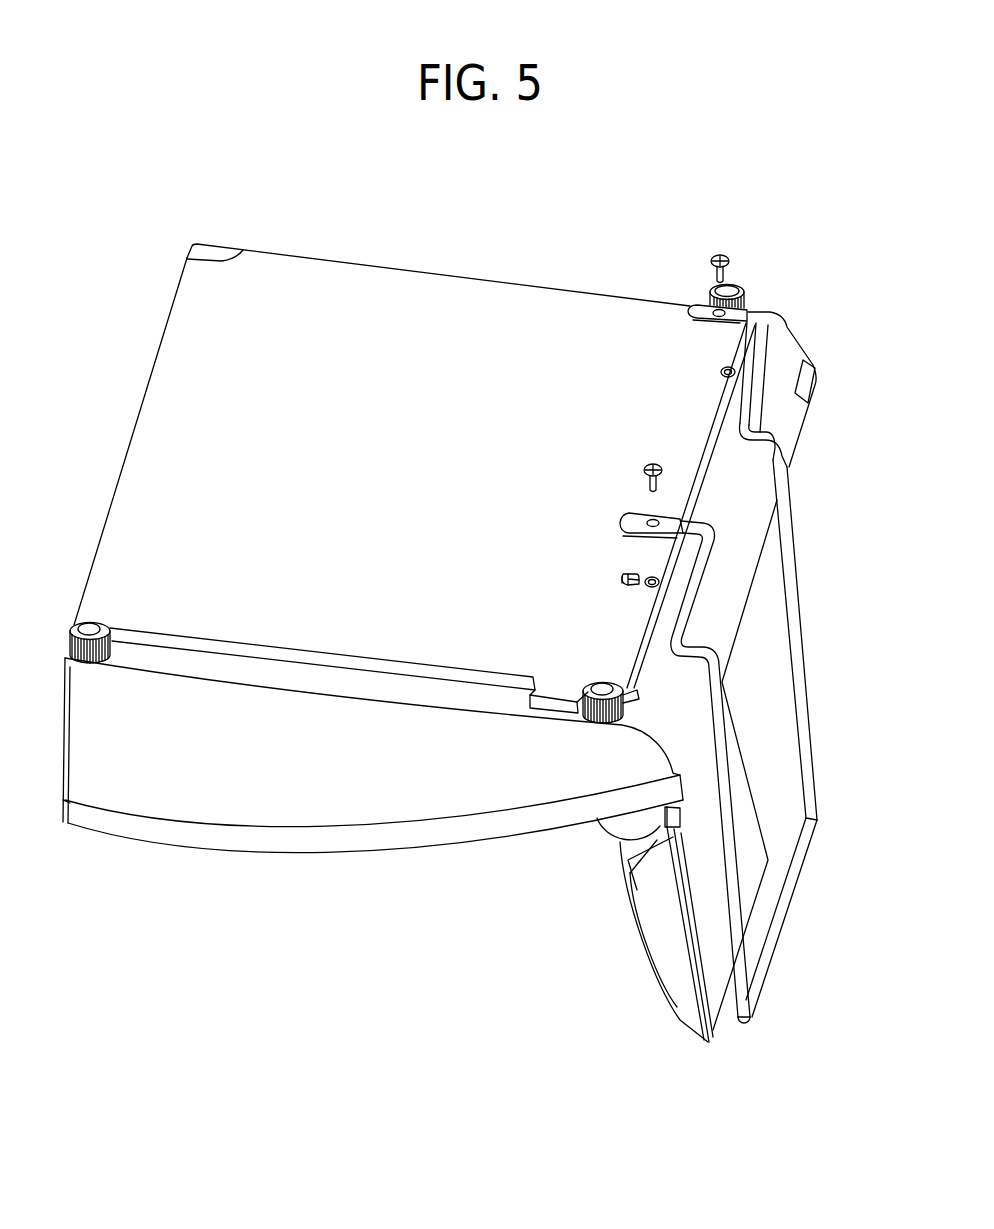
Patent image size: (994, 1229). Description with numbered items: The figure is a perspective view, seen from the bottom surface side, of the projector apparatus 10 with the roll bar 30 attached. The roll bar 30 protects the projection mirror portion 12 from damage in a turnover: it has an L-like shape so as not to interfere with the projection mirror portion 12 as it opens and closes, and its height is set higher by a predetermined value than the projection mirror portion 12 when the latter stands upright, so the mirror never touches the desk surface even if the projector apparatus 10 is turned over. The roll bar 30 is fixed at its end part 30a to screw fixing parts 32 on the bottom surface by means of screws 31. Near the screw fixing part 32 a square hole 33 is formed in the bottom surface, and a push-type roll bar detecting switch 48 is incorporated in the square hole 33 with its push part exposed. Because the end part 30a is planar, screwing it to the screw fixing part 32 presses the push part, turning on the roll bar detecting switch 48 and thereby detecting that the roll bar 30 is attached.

The projector apparatus 10 is at (316, 250).
The projection mirror portion 12 is at (675, 947).
The roll bar 30 is at (802, 697).
The end part 30a is at (697, 306).
The screw 31 is at (730, 259).
The screw fixing part 32 is at (735, 370).
The square hole 33 is at (621, 580).
The roll bar detecting switch 48 is at (628, 573).